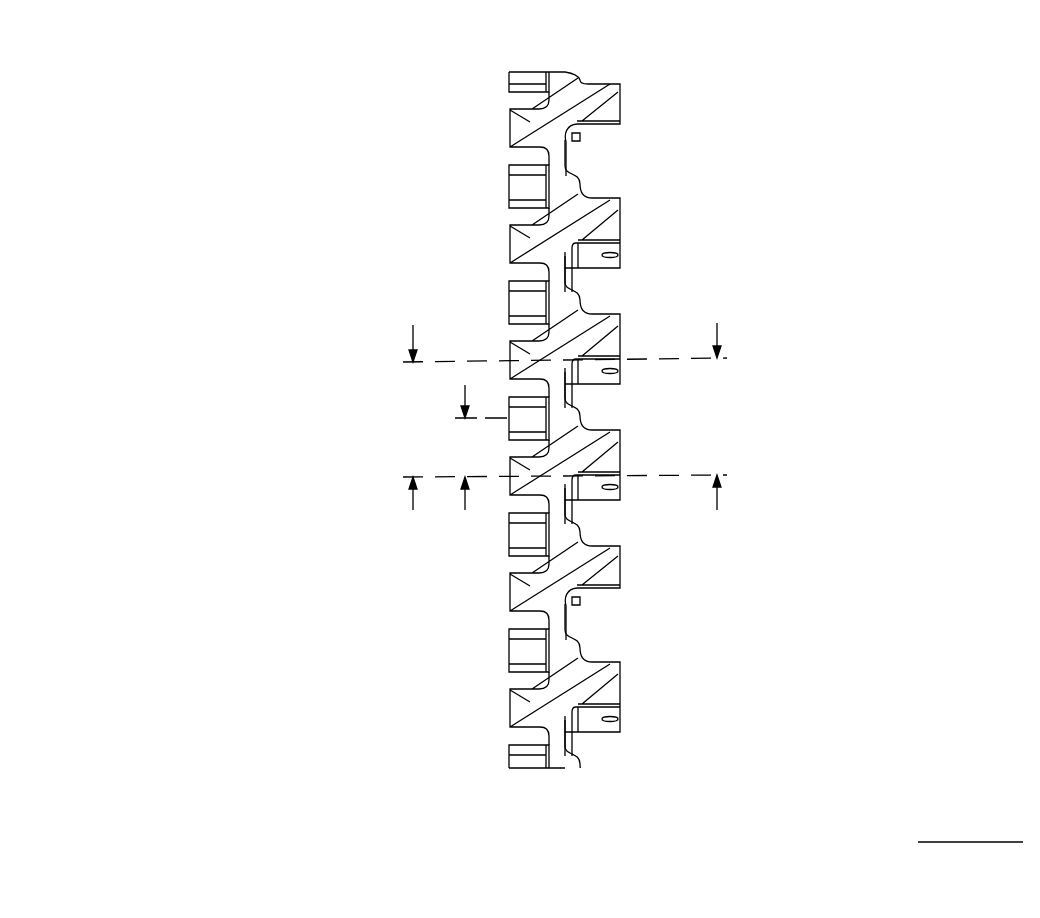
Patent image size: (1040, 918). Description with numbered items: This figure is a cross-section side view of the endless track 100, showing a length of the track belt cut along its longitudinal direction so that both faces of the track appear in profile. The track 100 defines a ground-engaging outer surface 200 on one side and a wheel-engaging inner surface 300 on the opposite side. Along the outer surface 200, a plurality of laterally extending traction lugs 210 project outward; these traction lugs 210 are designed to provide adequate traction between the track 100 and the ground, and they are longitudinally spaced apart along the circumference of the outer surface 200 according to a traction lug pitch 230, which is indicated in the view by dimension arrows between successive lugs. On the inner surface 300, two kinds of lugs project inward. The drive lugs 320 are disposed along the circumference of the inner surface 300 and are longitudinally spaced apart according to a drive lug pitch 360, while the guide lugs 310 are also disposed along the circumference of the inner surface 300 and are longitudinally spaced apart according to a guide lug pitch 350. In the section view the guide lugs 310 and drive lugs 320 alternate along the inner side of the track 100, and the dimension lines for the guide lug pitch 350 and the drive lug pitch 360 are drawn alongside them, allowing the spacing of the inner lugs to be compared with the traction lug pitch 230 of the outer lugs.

The endless track 100 is at (205, 623).
The ground-engaging outer surface 200 is at (672, 102).
The traction lugs 210 is at (608, 230).
The traction lug pitch 230 is at (710, 403).
The wheel-engaging inner surface 300 is at (433, 110).
The guide lugs 310 is at (527, 652).
The drive lugs 320 is at (543, 598).
The guide lug pitch 350 is at (480, 461).
The drive lug pitch 360 is at (557, 403).